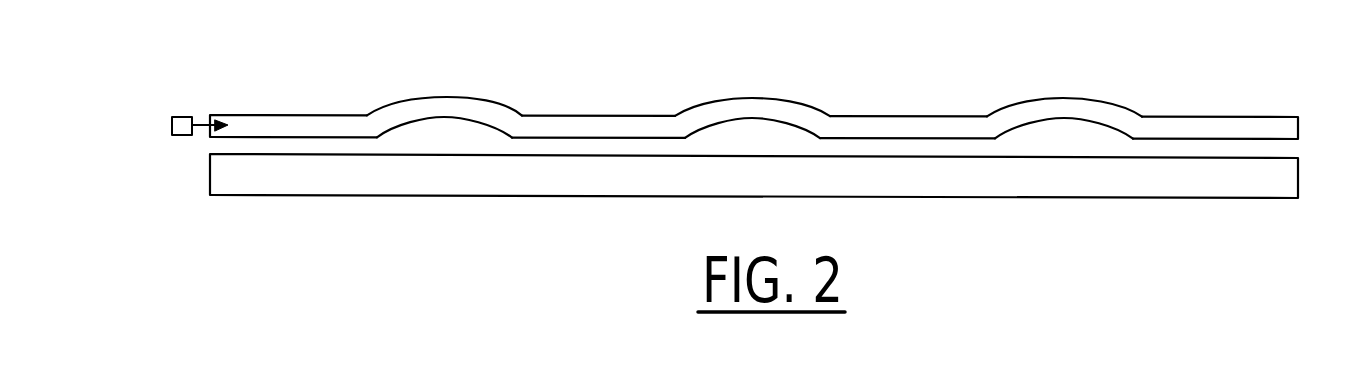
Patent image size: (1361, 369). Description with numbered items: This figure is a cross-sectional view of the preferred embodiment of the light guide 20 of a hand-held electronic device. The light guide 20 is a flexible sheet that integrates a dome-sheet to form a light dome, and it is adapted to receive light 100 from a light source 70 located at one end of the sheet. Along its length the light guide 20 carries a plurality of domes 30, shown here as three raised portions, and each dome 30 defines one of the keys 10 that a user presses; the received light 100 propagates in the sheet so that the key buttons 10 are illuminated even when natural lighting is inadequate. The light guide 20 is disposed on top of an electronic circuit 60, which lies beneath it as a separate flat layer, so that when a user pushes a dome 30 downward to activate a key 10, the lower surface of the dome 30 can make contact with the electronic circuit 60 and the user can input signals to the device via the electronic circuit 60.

The key button 10 is at (1063, 80).
The light guide 20 is at (1288, 130).
The dome 30 is at (1113, 110).
The electronic circuit 60 is at (1288, 178).
The light source 70 is at (172, 126).
The light 100 is at (208, 121).